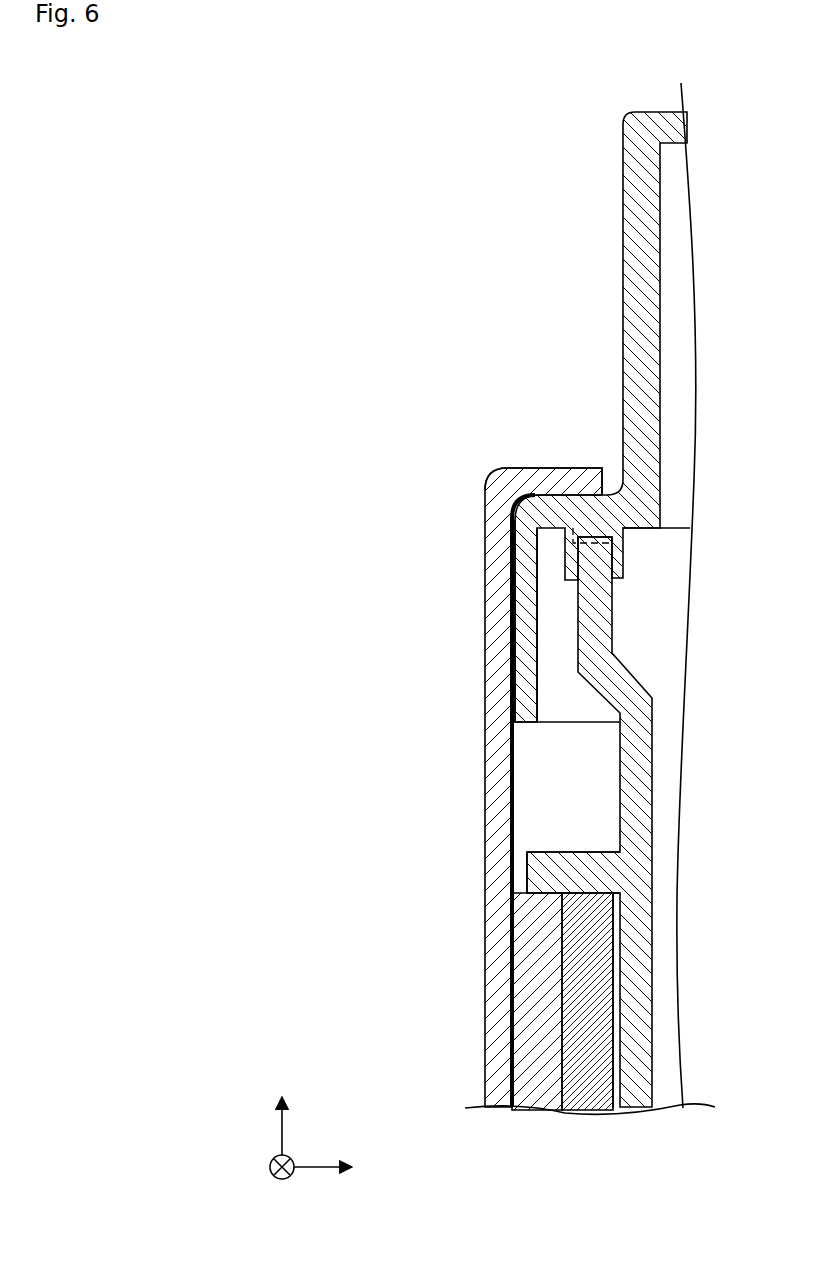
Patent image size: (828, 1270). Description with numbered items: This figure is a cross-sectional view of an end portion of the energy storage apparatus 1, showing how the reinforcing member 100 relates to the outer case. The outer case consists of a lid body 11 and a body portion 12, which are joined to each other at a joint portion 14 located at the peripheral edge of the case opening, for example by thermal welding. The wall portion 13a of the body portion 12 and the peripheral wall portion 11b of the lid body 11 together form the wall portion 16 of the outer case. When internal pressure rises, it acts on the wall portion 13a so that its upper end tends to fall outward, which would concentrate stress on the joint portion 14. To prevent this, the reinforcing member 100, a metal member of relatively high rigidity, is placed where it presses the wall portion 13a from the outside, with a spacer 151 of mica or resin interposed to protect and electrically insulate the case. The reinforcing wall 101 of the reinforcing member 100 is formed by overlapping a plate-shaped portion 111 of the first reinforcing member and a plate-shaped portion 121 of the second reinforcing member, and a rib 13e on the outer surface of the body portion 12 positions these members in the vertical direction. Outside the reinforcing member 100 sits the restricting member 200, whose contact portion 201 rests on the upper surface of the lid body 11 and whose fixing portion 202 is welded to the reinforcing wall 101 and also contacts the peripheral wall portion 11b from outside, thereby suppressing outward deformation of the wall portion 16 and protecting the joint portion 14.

The energy storage apparatus 1 is at (374, 196).
The lid body 11 is at (633, 262).
The peripheral wall portion 11b is at (525, 665).
The body portion 12 is at (550, 821).
The wall portion 13a is at (638, 775).
The rib 13e is at (548, 875).
The joint portion 14 is at (612, 530).
The wall portion 16 is at (368, 675).
The reinforcing member 100 is at (307, 928).
The reinforcing wall 101 is at (377, 942).
The plate-shaped portion 111 is at (543, 968).
The plate-shaped portion 121 is at (588, 1060).
The spacer 151 is at (612, 914).
The restricting member 200 is at (430, 428).
The contact portion 201 is at (551, 480).
The fixing portion 202 is at (490, 607).